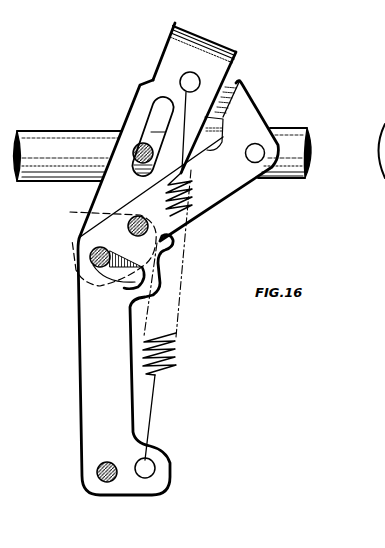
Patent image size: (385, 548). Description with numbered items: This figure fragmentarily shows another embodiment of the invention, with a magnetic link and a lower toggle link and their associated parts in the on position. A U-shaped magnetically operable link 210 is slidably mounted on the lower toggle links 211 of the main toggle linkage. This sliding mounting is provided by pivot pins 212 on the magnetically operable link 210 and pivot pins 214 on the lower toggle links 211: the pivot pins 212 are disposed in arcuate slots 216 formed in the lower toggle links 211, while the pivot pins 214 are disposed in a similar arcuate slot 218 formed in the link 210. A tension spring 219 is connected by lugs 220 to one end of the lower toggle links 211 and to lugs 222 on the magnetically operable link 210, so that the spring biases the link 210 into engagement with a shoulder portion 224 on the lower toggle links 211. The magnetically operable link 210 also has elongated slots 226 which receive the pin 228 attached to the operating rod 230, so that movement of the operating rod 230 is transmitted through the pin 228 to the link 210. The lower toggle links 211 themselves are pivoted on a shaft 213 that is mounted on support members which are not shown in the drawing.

The magnetically operable link 210 is at (222, 42).
The lower toggle links 211 is at (83, 357).
The pivot pins 212 is at (90, 258).
The shaft 213 is at (97, 467).
The pivot pins 214 is at (128, 228).
The arcuate slots 216 is at (131, 284).
The arcuate slot 218 is at (85, 212).
The tension spring 219 is at (176, 348).
The lugs 220 is at (153, 462).
The lugs 222 is at (182, 73).
The shoulder portion 224 is at (233, 82).
The elongated slots 226 is at (156, 106).
The pin 228 is at (135, 143).
The operating rod 230 is at (294, 128).